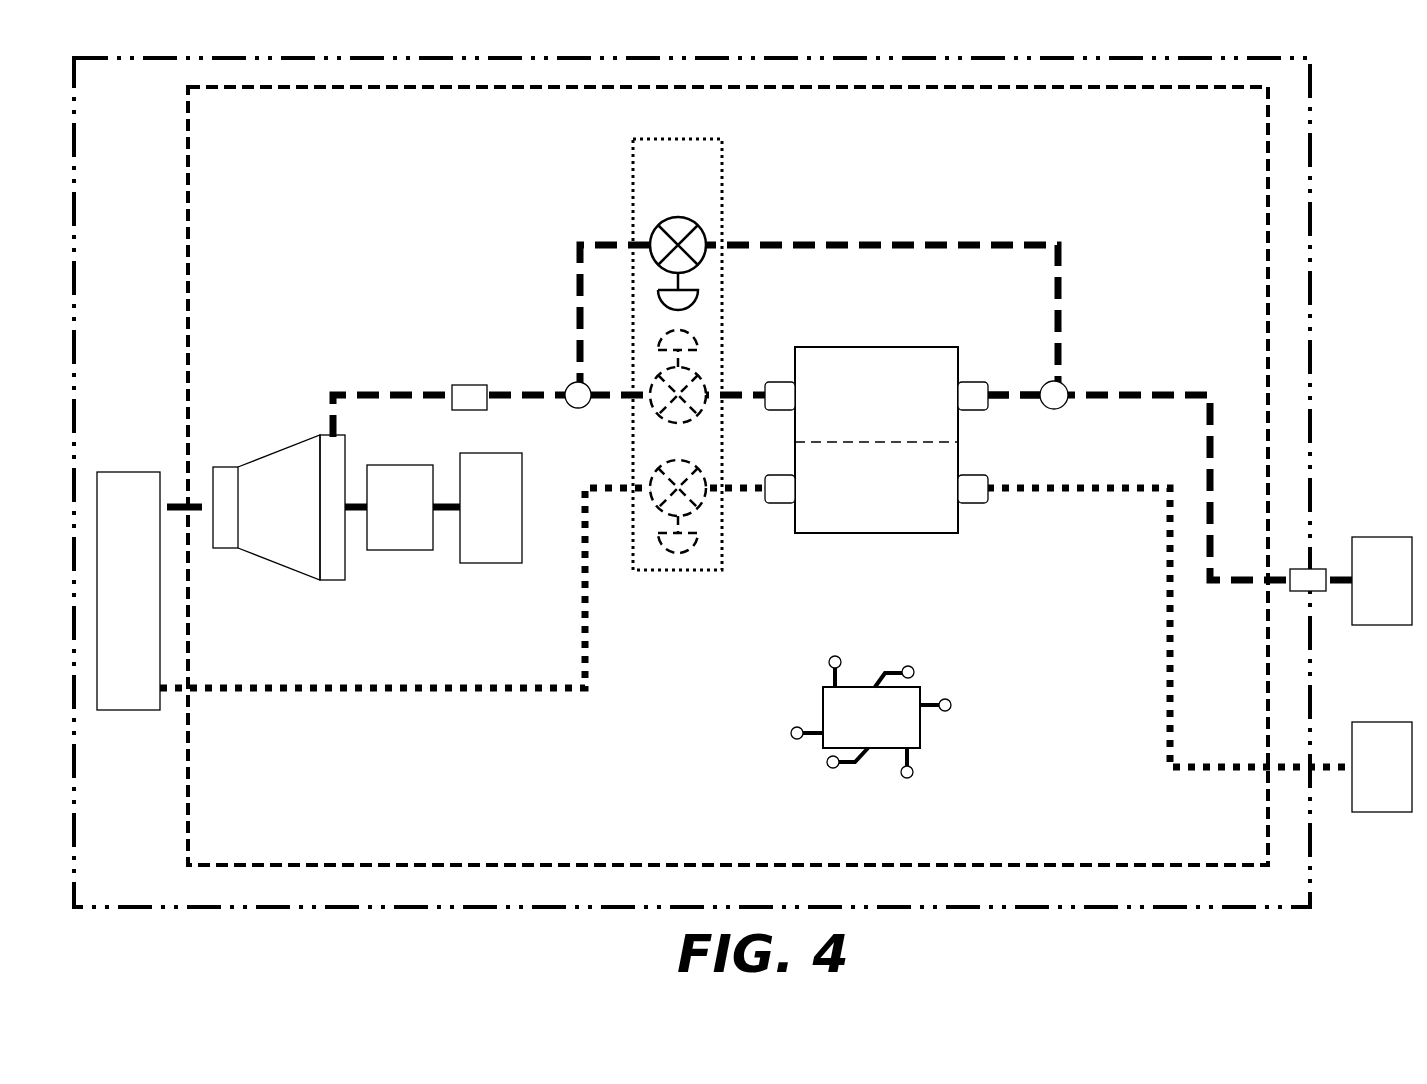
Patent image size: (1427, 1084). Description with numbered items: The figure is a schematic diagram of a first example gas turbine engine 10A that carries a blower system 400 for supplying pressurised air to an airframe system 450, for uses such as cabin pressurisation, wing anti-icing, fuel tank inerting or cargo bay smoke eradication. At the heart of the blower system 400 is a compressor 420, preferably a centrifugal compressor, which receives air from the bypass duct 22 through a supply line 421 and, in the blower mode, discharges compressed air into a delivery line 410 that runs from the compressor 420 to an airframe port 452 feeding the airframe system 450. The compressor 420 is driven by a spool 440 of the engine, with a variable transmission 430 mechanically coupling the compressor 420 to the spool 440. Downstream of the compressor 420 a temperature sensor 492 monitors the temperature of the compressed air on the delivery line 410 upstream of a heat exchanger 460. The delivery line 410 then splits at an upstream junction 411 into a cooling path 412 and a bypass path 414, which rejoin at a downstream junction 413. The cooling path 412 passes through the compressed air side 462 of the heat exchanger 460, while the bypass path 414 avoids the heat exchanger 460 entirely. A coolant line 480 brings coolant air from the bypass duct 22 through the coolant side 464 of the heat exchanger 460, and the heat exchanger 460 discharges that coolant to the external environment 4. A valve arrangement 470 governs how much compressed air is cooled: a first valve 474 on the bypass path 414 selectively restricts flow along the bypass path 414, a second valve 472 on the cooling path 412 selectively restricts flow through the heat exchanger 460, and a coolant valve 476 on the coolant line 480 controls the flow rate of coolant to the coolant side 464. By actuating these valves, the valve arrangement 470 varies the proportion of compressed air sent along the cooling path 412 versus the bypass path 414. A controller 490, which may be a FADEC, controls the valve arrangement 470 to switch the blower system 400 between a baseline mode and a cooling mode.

The gas turbine engine 10A is at (140, 108).
The blower system 400 is at (253, 134).
The delivery line 410 is at (400, 395).
The upstream junction 411 is at (580, 408).
The cooling path 412 is at (1020, 392).
The downstream junction 413 is at (1054, 410).
The bypass path 414 is at (845, 245).
The bypass duct 22 is at (128, 485).
The supply line 421 is at (197, 505).
The compressor 420 is at (278, 540).
The variable transmission 430 is at (405, 520).
The spool 440 is at (492, 545).
The airframe system 450 is at (1385, 608).
The airframe port 452 is at (1310, 572).
The heat exchanger 460 is at (876, 464).
The compressed air side 462 is at (903, 412).
The coolant side 464 is at (903, 504).
The valve arrangement 470 is at (703, 186).
The second valve 472 is at (700, 380).
The first valve 474 is at (700, 264).
The coolant valve 476 is at (700, 540).
The coolant line 480 is at (320, 688).
The controller 490 is at (898, 729).
The temperature sensor 492 is at (470, 392).
The external environment 4 is at (1372, 790).